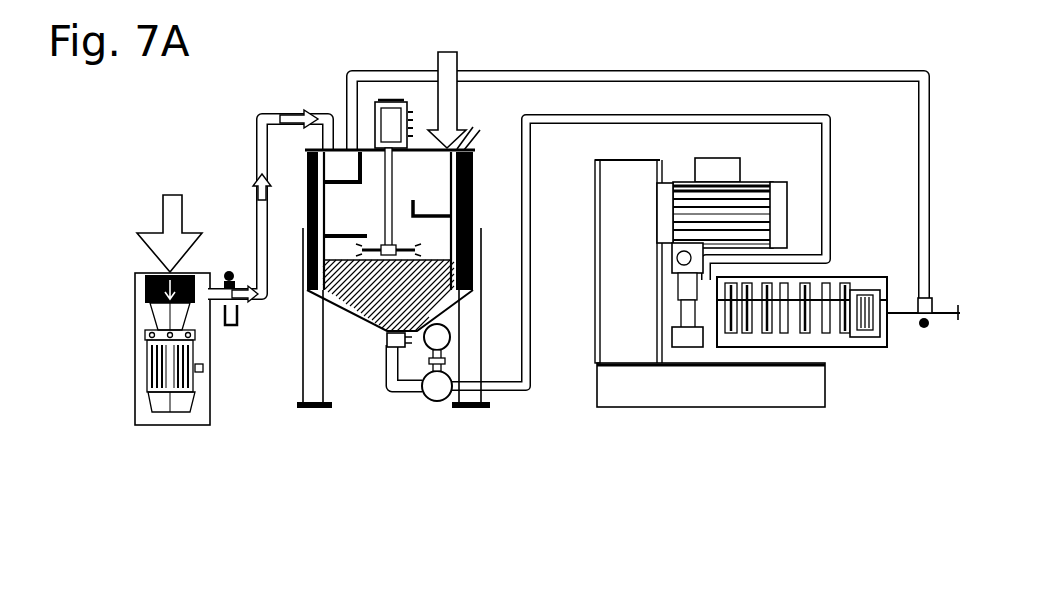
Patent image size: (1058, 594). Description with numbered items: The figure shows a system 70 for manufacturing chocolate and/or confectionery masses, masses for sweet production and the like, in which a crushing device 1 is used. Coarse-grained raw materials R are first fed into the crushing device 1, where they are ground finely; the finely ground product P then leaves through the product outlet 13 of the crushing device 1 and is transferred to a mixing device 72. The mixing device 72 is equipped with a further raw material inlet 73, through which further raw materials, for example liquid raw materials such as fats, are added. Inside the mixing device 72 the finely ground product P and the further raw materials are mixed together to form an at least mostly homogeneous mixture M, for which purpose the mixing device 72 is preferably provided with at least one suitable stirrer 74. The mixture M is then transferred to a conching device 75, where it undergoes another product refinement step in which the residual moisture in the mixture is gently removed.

The crushing device 1 is at (160, 437).
The product outlet 13 is at (207, 294).
The system 70 is at (680, 485).
The mixing device 72 is at (363, 419).
The further raw material inlet 73 is at (472, 128).
The stirrer 74 is at (378, 200).
The conching device 75 is at (690, 430).